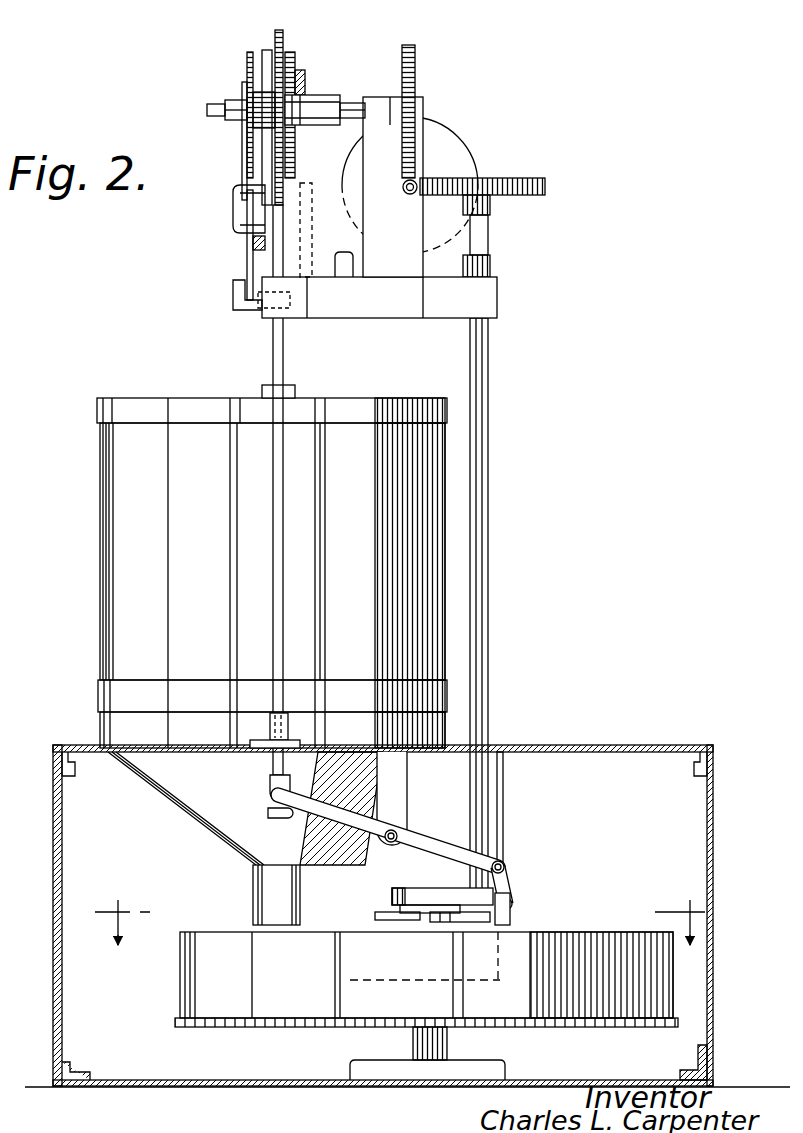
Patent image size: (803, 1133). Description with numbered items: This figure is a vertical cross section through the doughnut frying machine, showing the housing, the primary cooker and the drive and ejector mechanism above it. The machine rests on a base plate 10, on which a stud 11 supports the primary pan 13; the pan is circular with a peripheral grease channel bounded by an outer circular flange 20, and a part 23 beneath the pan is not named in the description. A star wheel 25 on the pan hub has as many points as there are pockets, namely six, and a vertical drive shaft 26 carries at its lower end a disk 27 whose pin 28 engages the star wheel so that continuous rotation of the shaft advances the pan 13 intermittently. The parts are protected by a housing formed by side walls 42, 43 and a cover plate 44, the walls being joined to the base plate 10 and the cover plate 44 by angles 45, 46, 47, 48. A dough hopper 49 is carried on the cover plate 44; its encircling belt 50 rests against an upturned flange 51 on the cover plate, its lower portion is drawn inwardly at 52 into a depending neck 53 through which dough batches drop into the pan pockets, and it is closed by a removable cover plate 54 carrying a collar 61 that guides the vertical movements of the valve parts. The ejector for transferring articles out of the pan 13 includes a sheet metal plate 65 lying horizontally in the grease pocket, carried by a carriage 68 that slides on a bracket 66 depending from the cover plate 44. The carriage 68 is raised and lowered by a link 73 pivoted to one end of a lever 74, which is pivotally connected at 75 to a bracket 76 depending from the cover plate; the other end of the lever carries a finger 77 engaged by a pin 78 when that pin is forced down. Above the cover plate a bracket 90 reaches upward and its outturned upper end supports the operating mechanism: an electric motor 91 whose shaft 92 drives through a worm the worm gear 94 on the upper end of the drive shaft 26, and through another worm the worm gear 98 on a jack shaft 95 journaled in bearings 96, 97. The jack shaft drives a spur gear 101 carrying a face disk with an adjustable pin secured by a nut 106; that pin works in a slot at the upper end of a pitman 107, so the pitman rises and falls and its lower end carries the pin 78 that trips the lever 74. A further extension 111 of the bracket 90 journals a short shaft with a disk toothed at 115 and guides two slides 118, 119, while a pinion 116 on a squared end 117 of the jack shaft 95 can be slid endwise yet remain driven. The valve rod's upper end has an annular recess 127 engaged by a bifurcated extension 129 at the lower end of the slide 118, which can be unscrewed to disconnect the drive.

The base plate 10 is at (240, 1083).
The stud 11 is at (413, 1042).
The primary pan 13 is at (178, 978).
The outer circular flange 20 is at (426, 975).
The bottom plate 23 is at (245, 1028).
The star wheel 25 is at (378, 916).
The vertical drive shaft 26 is at (488, 600).
The disk 27 is at (512, 916).
The pin 28 is at (440, 925).
The side wall 42 is at (53, 862).
The side wall 43 is at (768, 839).
The cover plate 44 is at (620, 723).
The angle 45 is at (72, 1070).
The angle 46 is at (700, 1058).
The angle 47 is at (108, 803).
The angle 48 is at (698, 770).
The dough hopper 49 is at (153, 633).
The encircling belt 50 is at (98, 694).
The upturned flange 51 is at (120, 730).
The inwardly drawn lower portion 52 is at (178, 798).
The neck 53 is at (262, 893).
The removable cover plate 54 is at (240, 397).
The collar 61 is at (295, 392).
The sheet metal plate 65 is at (395, 985).
The bracket 66 is at (503, 822).
The carriage 68 is at (513, 905).
The link 73 is at (508, 885).
The lever 74 is at (432, 852).
The pivot 75 is at (400, 838).
The bracket 76 is at (408, 800).
The finger 77 is at (275, 818).
The pin 78 is at (268, 796).
The bracket 90 is at (379, 315).
The electric driving motor 91 is at (458, 148).
The motor shaft 92 is at (410, 195).
The worm gear 94 is at (580, 195).
The jack shaft 95 is at (347, 102).
The bearing 96 is at (375, 97).
The bearing 97 is at (313, 98).
The worm gear 98 is at (415, 60).
The spur gear 101 is at (284, 30).
The nut 106 is at (262, 65).
The pitman 107 is at (284, 595).
The extension 111 is at (258, 237).
The teeth 115 is at (247, 60).
The pinion 116 is at (253, 122).
The squared end 117 is at (220, 103).
The slide 118 is at (247, 268).
The slide 119 is at (297, 68).
The annular recess 127 is at (253, 247).
The bifurcated extension 129 is at (240, 305).